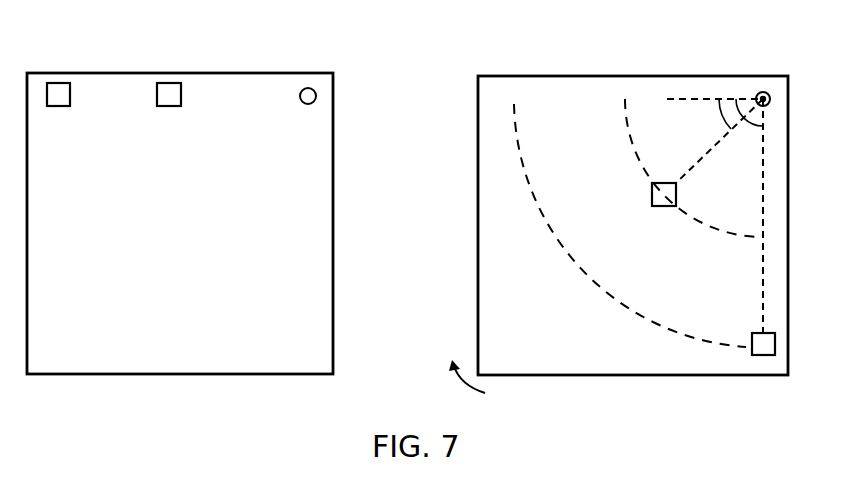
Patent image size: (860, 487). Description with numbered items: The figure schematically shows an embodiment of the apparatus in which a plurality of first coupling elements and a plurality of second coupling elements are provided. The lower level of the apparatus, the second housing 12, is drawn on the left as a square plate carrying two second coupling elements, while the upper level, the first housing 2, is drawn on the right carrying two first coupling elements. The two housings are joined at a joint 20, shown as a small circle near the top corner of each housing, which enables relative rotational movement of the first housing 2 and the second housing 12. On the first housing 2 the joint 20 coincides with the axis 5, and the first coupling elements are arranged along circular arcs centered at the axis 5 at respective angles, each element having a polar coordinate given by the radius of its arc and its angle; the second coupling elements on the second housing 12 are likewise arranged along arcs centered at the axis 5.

The second housing 12 is at (226, 73).
The joint 20 is at (313, 86).
The first housing 2 is at (681, 76).
The axis 5 is at (770, 99).